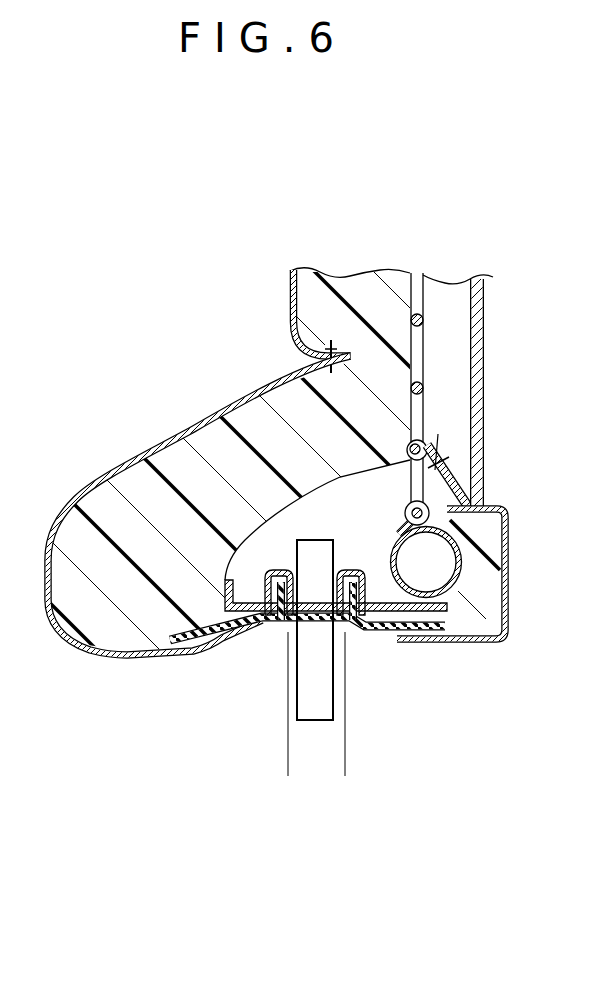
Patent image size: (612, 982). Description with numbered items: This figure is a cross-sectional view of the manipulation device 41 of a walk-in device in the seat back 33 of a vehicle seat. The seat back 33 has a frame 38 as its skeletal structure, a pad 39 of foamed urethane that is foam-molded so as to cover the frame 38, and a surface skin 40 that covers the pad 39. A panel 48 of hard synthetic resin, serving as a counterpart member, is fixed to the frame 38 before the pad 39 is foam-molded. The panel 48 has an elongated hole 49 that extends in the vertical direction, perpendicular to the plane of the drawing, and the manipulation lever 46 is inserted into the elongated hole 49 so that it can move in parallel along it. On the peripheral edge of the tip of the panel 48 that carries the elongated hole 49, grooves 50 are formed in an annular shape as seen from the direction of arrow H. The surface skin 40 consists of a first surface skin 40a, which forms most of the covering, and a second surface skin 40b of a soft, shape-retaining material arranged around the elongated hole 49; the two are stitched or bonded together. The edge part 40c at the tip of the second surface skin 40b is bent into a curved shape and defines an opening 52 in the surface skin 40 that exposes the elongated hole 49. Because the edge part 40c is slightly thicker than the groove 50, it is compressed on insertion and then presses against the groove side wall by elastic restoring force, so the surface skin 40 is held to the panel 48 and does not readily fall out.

The seat back 33 is at (82, 354).
The pad 39 is at (203, 420).
The frame 38 is at (437, 567).
The surface skin 40 is at (233, 654).
The first surface skin 40a is at (50, 523).
The second surface skin 40b is at (263, 630).
The edge part 40c is at (300, 597).
The manipulation device 41 is at (394, 740).
The manipulation lever 46 is at (318, 703).
The panel 48 is at (380, 630).
The elongated hole 49 is at (290, 632).
The groove 50 is at (281, 568).
The opening 52 is at (348, 780).
The arrow H is at (318, 848).